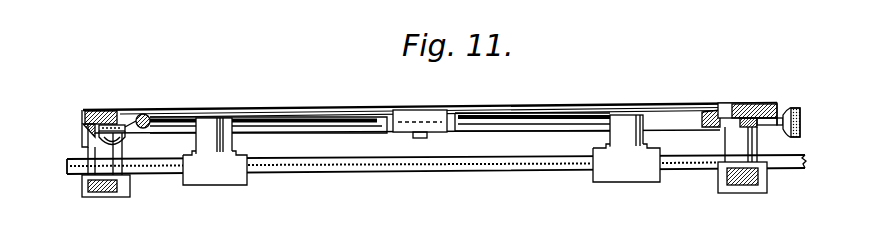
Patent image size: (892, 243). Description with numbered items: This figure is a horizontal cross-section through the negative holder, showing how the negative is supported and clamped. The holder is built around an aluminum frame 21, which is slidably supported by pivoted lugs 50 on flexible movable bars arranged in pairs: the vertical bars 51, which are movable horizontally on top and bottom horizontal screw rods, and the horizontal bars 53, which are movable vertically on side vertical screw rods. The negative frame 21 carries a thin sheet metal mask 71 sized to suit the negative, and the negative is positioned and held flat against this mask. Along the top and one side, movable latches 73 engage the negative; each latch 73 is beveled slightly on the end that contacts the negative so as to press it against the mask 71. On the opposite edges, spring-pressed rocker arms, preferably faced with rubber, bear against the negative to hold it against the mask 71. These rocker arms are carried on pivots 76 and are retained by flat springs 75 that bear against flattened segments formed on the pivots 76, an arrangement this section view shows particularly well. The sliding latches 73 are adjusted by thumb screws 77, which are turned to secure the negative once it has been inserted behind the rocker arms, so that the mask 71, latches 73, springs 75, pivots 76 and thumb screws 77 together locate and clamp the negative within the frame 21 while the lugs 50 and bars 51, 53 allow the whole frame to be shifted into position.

The aluminum frame 21 is at (767, 105).
The pivoted lugs 50 is at (221, 172).
The vertical bars 51 is at (115, 193).
The horizontal bars 53 is at (512, 161).
The sheet metal mask 71 is at (325, 108).
The movable latches 73 is at (440, 115).
The flat springs 75 is at (110, 126).
The pivots 76 is at (127, 143).
The thumb screws 77 is at (800, 122).